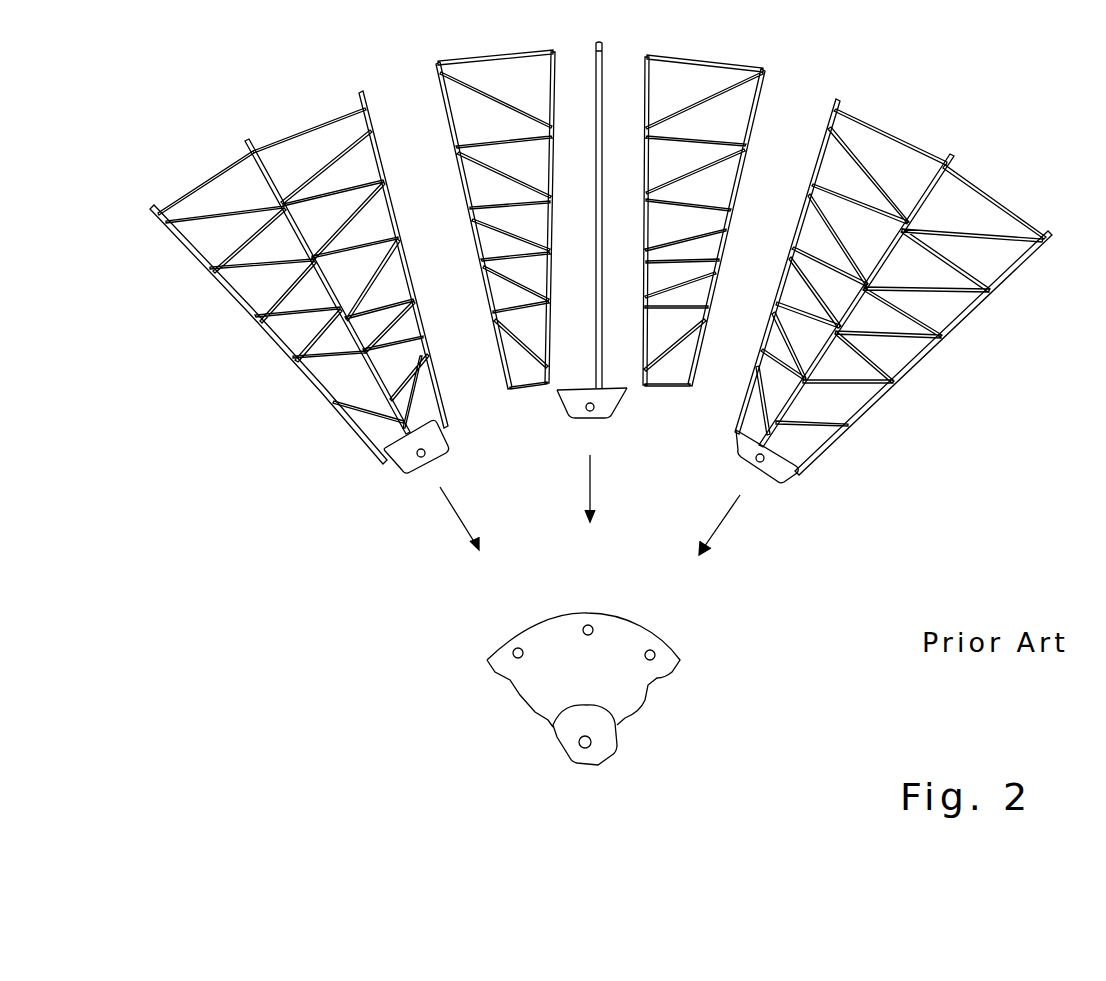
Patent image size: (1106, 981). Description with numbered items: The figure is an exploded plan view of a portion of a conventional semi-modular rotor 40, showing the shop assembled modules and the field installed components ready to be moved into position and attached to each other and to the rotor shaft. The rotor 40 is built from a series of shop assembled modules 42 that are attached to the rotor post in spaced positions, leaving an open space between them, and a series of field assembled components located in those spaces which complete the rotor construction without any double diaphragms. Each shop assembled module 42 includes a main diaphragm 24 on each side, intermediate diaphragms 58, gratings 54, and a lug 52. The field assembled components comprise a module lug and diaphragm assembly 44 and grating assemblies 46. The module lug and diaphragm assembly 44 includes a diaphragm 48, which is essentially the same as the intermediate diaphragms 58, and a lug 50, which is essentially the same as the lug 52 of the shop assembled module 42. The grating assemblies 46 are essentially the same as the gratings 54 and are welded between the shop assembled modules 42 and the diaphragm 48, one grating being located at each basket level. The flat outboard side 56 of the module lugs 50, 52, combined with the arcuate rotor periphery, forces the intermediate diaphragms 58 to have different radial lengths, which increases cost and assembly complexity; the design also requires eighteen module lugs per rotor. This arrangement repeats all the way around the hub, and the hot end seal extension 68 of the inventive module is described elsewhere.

The semi-modular rotor 40 is at (298, 573).
The shop assembled module 42 is at (187, 129).
The module lug and diaphragm assembly 44 is at (601, 42).
The grating assembly 46 is at (478, 62).
The diaphragm 48 is at (596, 178).
The lug 50 is at (616, 415).
The lug 52 is at (796, 481).
The grating 54 is at (896, 136).
The flat outboard side 56 is at (562, 390).
The intermediate diaphragm 58 is at (250, 139).
The main diaphragm 24 is at (787, 236).
The hot end seal extension 68 is at (951, 155).